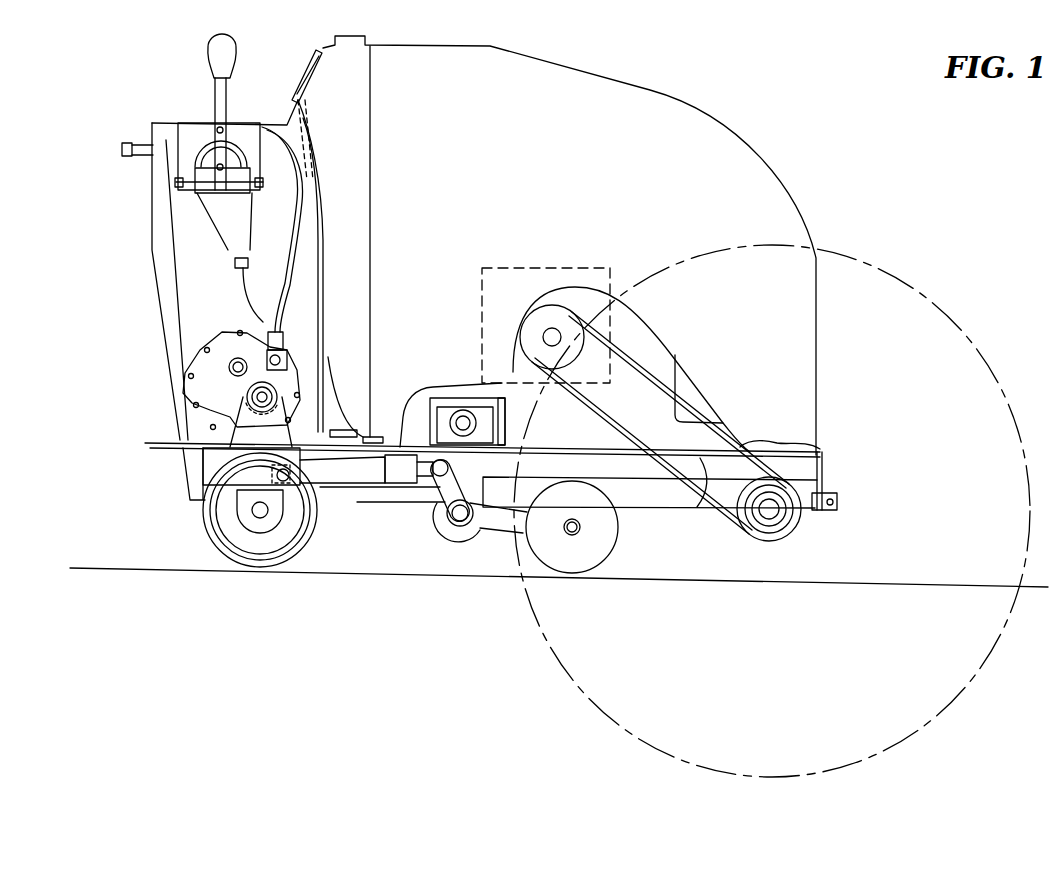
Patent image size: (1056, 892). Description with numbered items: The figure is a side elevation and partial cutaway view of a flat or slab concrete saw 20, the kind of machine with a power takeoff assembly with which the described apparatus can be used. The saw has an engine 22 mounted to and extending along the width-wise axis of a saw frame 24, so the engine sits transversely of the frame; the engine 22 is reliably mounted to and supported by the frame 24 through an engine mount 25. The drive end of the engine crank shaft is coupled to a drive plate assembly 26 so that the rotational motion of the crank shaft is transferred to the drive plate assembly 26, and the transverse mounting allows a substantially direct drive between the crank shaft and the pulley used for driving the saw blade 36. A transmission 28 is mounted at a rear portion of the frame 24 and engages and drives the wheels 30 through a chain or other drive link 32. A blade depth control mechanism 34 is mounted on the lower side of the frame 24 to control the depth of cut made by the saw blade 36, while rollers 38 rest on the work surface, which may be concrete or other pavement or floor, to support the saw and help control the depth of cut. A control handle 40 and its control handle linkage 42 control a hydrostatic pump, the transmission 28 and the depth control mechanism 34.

The slab saw 20 is at (578, 56).
The engine 22 is at (645, 345).
The saw frame 24 is at (326, 463).
The engine mount 25 is at (423, 385).
The drive plate assembly 26 is at (540, 255).
The transmission 28 is at (190, 353).
The wheels 30 is at (192, 520).
The drive link 32 is at (230, 438).
The blade depth control mechanism 34 is at (345, 506).
The saw blade 36 is at (550, 650).
The rollers 38 is at (597, 545).
The control handle 40 is at (212, 64).
The control handle linkage 42 is at (190, 147).